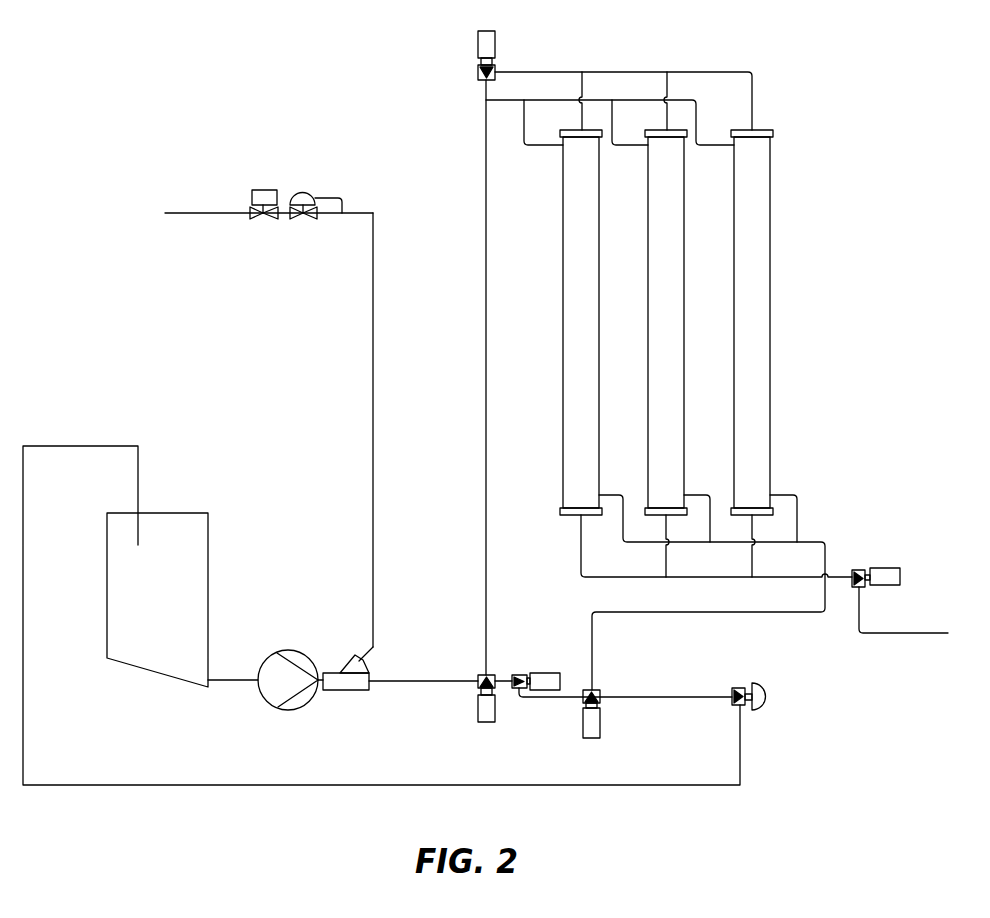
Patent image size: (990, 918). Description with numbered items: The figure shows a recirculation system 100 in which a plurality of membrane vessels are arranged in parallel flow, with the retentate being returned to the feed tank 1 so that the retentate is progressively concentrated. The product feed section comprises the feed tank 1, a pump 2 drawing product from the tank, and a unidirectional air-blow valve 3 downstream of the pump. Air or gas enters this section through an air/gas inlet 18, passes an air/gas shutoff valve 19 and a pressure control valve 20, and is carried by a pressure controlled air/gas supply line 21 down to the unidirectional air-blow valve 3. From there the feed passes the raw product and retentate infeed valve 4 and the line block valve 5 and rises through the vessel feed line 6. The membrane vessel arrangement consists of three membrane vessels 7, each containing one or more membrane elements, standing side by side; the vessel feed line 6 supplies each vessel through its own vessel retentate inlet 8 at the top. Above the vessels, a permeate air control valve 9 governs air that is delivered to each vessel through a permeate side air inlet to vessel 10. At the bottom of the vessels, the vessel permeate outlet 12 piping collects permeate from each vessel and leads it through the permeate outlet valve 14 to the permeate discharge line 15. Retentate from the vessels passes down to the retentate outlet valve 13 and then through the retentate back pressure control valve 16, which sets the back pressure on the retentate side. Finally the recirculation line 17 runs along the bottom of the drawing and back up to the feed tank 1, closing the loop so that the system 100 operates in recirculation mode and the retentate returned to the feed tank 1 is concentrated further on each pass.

The feed tank 1 is at (210, 556).
The pump 2 is at (290, 650).
The unidirectional air-blow valve 3 is at (366, 665).
The raw product and retentate infeed valve 4 is at (490, 722).
The line block valve 5 is at (520, 674).
The vessel feed line 6 is at (486, 422).
The membrane vessel 7 is at (600, 273).
The vessel retentate inlet 8 is at (529, 143).
The permeate air control valve 9 is at (478, 42).
The permeate side air inlet to vessel 10 is at (582, 80).
The vessel permeate outlet 12 is at (608, 493).
The retentate outlet valve 13 is at (598, 740).
The permeate outlet valve 14 is at (885, 566).
The permeate discharge line 15 is at (924, 633).
The retentate back pressure control valve 16 is at (738, 688).
The recirculation line 17 is at (25, 718).
The air/gas inlet 18 is at (208, 213).
The air/gas shutoff valve 19 is at (263, 190).
The pressure control valve 20 is at (303, 190).
The pressure controlled air/gas supply line 21 is at (373, 348).
The system 100 is at (886, 144).